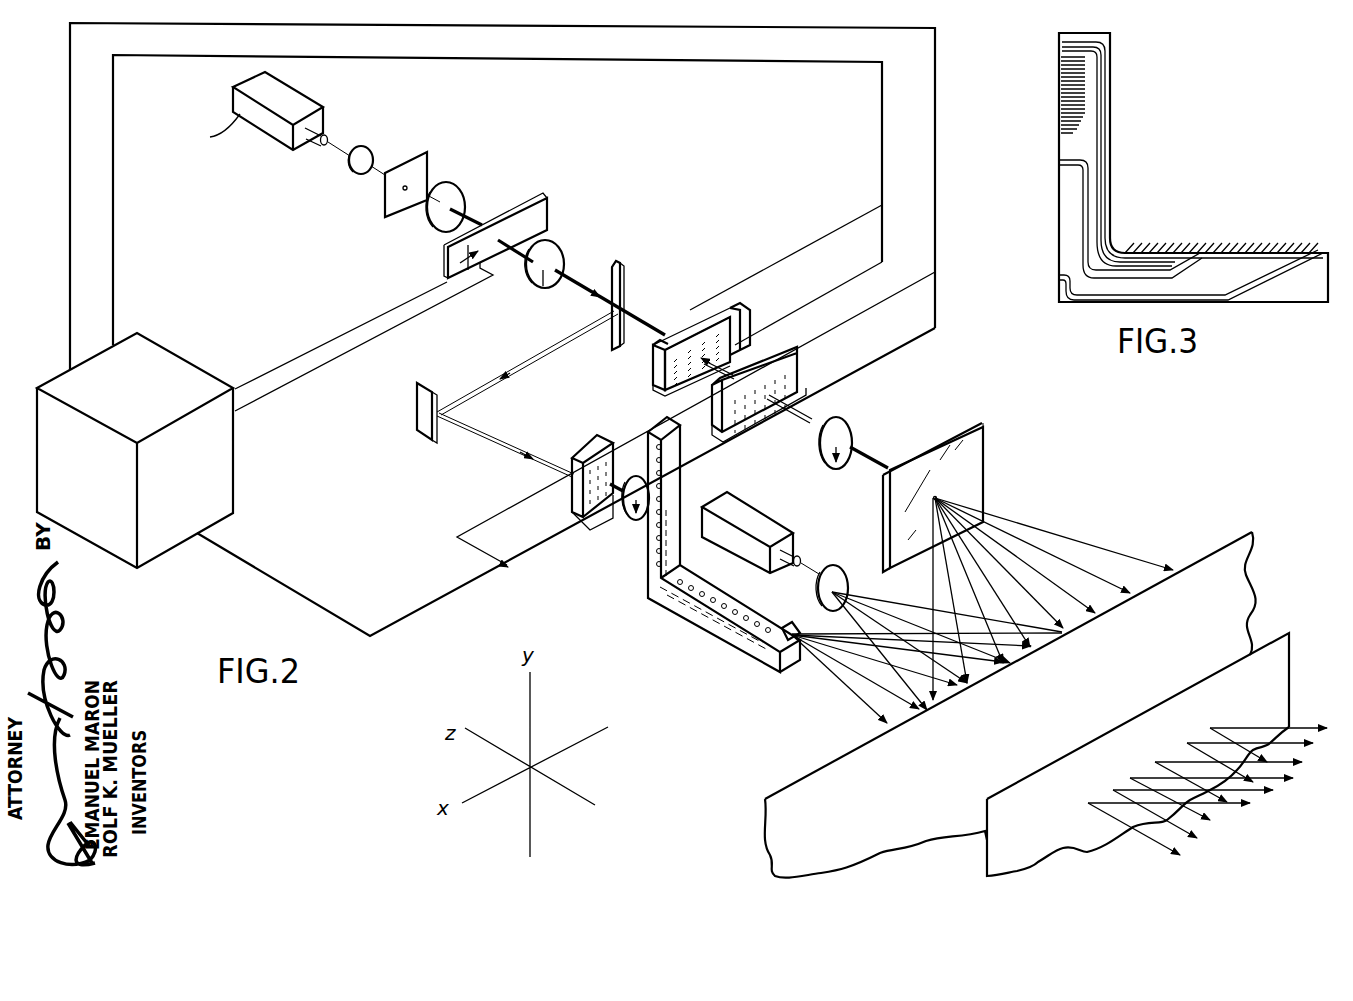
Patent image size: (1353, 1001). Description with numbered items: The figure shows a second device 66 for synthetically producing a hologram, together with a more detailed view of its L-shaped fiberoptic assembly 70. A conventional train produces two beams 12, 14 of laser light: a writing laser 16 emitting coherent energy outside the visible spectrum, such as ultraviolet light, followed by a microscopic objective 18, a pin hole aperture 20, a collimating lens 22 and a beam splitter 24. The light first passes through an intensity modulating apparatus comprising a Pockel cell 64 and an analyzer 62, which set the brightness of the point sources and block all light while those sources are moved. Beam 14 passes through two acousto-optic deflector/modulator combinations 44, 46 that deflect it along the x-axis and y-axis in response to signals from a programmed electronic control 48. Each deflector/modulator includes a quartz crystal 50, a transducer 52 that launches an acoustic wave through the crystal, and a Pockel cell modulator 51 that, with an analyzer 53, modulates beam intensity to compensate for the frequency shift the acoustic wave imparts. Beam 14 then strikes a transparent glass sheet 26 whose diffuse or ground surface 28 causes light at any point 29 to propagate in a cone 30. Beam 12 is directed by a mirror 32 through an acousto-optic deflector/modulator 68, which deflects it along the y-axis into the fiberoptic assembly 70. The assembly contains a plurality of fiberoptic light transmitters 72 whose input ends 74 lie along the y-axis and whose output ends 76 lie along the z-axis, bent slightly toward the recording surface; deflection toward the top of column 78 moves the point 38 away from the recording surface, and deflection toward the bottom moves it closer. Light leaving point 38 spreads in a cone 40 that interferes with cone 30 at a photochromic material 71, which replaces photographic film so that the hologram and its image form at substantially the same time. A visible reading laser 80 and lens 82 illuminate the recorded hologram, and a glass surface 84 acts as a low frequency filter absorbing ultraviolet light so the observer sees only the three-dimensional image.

In FIG. 2, the beam 12 is at (515, 371).
In FIG. 2, the beam 14 is at (640, 319).
In FIG. 2, the laser 16 is at (298, 93).
In FIG. 2, the microscopic objective 18 is at (364, 148).
In FIG. 2, the pin hole aperture 20 is at (407, 186).
In FIG. 2, the collimating lens 22 is at (463, 199).
In FIG. 2, the beam splitter 24 is at (622, 277).
In FIG. 2, the transparent glass sheet 26 is at (985, 430).
In FIG. 2, the diffuse or ground surface 28 is at (985, 453).
In FIG. 2, the point 29 is at (938, 500).
In FIG. 2, the cone 30 is at (1032, 545).
In FIG. 2, the mirror 32 is at (418, 434).
In FIG. 2, the point 38 is at (784, 628).
In FIG. 2, the cone 40 is at (840, 652).
In FIG. 2, the acousto-optic deflector/modulator combination 44 is at (717, 312).
In FIG. 2, the acousto-optic deflector/modulator combination 46 is at (778, 362).
In FIG. 2, the programmed electronic control 48 is at (183, 363).
In FIG. 2, the crystal 50 is at (660, 396).
In FIG. 2, the Pockel cell modulator 51 is at (652, 372).
In FIG. 2, the transducer 52 is at (745, 306).
In FIG. 2, the analyzer 53 is at (849, 430).
In FIG. 2, the analyzer 62 is at (566, 255).
In FIG. 2, the Pockel cell 64 is at (547, 208).
In FIG. 2, the device 66 is at (689, 130).
In FIG. 2, the acousto-optic deflector/modulator 68 is at (565, 505).
In FIG. 2, the L-shaped fiberoptic assembly 70 is at (685, 613).
In FIG. 3, the L-shaped fiberoptic assembly 70 is at (1169, 179).
In FIG. 2, the photochromic material 71 is at (850, 762).
In FIG. 3, the fiberoptic light transmitters 72 is at (1110, 46).
In FIG. 3, the input ends 74 is at (1060, 48).
In FIG. 3, the output ends 76 is at (1156, 252).
In FIG. 3, the column 78 is at (1112, 133).
In FIG. 2, the laser 80 is at (756, 512).
In FIG. 2, the lens 82 is at (836, 577).
In FIG. 2, the glass surface 84 is at (1208, 684).